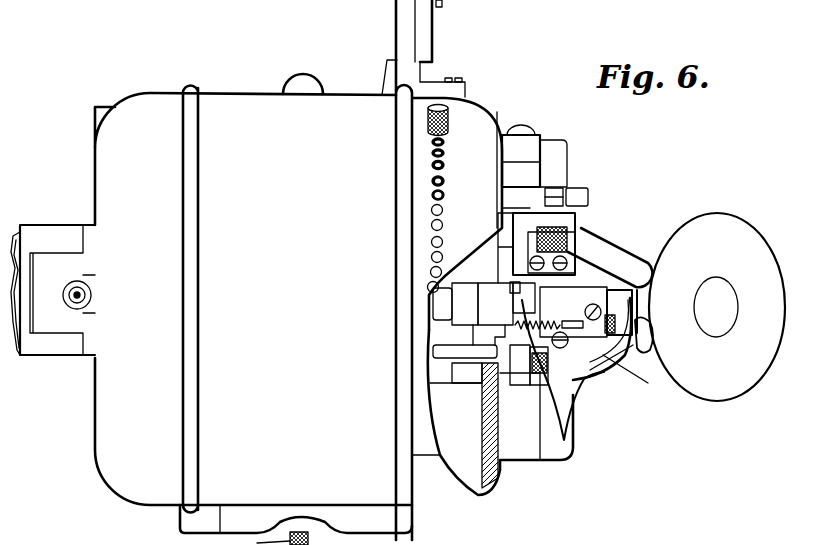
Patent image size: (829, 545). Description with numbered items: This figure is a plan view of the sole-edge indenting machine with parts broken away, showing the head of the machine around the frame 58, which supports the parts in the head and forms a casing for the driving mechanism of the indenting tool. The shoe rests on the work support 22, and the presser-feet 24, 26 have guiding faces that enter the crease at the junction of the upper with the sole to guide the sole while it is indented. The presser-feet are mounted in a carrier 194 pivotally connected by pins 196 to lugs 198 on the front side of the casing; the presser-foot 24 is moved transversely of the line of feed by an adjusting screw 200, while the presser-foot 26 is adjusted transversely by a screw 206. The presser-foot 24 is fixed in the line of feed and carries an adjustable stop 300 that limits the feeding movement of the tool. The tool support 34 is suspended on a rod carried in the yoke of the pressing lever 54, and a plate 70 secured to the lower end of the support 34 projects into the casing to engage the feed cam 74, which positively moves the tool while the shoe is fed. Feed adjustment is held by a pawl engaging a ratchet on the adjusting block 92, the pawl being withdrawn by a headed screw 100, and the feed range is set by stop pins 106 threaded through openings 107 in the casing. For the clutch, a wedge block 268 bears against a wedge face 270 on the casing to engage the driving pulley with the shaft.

The work support 22 is at (720, 223).
The presser-foot 24 is at (646, 352).
The presser-foot 26 is at (628, 266).
The support 34 is at (576, 317).
The pressing lever 54 is at (567, 392).
The frame 58 is at (470, 118).
The cam plate 70 is at (440, 349).
The feed cam 74 is at (440, 331).
The adjusting block 92 is at (436, 84).
The headed screw 100 is at (443, 6).
The stop pins 106 is at (445, 130).
The openings 107 is at (441, 196).
The carrier 194 is at (562, 145).
The pins 196 is at (527, 126).
The lugs 198 is at (532, 172).
The adjusting screw 200 is at (556, 393).
The screw 206 is at (563, 230).
The wedge block 268 is at (55, 217).
The wedge face 270 is at (58, 324).
The adjustable stop 300 is at (605, 369).